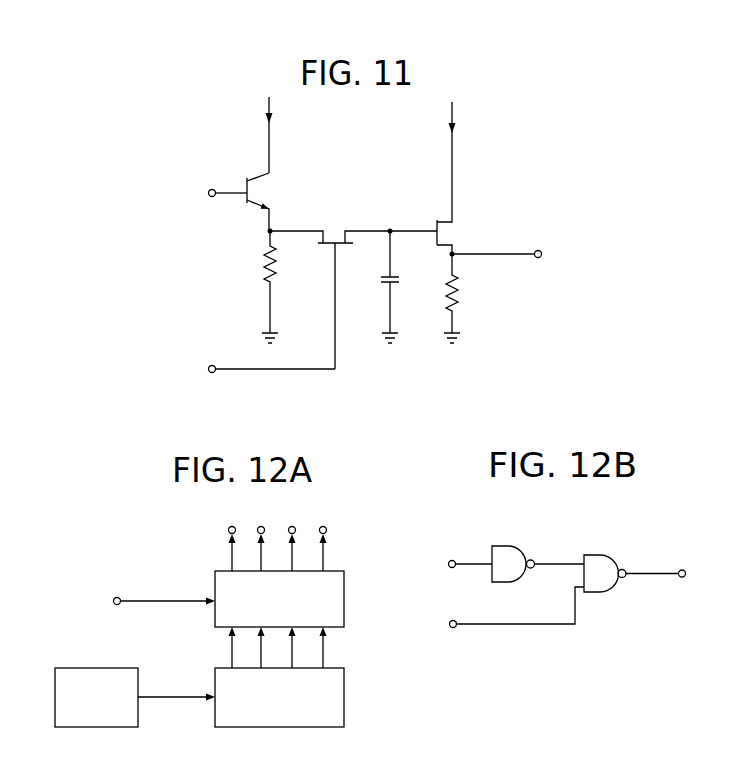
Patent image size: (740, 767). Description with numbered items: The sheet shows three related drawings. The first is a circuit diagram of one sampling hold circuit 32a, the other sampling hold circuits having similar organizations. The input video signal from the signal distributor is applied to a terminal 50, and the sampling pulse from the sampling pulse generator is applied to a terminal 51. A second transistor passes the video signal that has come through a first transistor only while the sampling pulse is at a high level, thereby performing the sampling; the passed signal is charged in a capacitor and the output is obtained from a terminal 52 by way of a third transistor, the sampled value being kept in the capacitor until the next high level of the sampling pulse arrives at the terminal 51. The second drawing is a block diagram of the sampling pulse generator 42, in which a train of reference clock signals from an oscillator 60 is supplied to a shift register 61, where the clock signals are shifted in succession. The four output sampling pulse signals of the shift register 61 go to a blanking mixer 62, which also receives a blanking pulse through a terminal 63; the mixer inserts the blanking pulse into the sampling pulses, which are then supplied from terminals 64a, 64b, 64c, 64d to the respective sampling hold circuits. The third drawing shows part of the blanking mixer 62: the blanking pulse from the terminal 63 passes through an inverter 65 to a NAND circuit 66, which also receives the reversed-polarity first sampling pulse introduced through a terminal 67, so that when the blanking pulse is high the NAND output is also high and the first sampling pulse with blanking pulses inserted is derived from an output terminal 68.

In FIG. 11, the sampling hold circuit 32a is at (538, 112).
In FIG. 11, the terminal 50 is at (210, 196).
In FIG. 11, the terminal 51 is at (210, 366).
In FIG. 11, the terminal 52 is at (540, 257).
In FIG. 12A, the sampling pulse generator 42 is at (141, 539).
In FIG. 12A, the oscillator 60 is at (93, 659).
In FIG. 12A, the shift register 61 is at (344, 693).
In FIG. 12A, the blanking mixer 62 is at (344, 589).
In FIG. 12A, the terminal 63 is at (115, 598).
In FIG. 12B, the terminal 63 is at (453, 560).
In FIG. 12A, the terminal 64a is at (232, 526).
In FIG. 12A, the terminal 64b is at (262, 526).
In FIG. 12A, the terminal 64c is at (292, 526).
In FIG. 12A, the terminal 64d is at (324, 526).
In FIG. 12B, the inverter 65 is at (511, 546).
In FIG. 12B, the NAND circuit 66 is at (606, 555).
In FIG. 12B, the terminal 67 is at (451, 627).
In FIG. 12B, the output terminal 68 is at (683, 570).